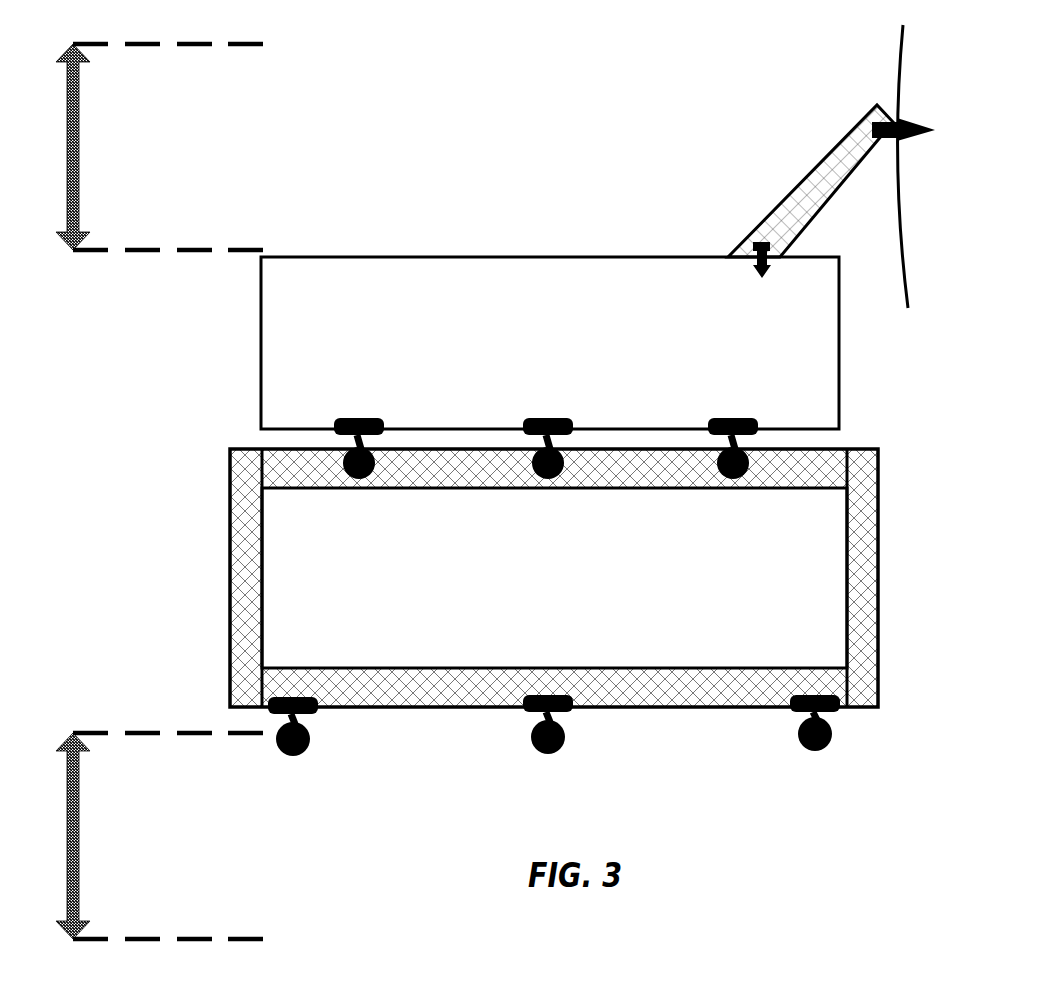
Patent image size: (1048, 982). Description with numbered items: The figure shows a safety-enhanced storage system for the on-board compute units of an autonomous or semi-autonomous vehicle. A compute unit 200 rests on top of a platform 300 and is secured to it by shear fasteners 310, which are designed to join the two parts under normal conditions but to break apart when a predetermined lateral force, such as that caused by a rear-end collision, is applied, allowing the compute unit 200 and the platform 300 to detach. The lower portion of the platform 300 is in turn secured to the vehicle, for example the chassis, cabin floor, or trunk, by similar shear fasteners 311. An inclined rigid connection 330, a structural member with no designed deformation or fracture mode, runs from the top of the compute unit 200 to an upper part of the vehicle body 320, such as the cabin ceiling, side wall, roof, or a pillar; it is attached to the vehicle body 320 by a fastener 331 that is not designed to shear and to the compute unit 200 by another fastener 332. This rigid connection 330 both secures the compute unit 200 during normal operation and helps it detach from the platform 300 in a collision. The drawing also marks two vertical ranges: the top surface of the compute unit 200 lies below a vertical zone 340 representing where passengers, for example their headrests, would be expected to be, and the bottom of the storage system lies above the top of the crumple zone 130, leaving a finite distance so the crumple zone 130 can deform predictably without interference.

The crumple zone 130 is at (126, 818).
The compute unit 200 is at (282, 329).
The platform 300 is at (230, 449).
The shear fasteners 310 is at (725, 418).
The shear fasteners 311 is at (830, 740).
The vehicle body 320 is at (900, 242).
The rigid connection 330 is at (798, 180).
The fastener 331 is at (932, 130).
The fastener 332 is at (752, 247).
The vertical zone 340 is at (91, 123).